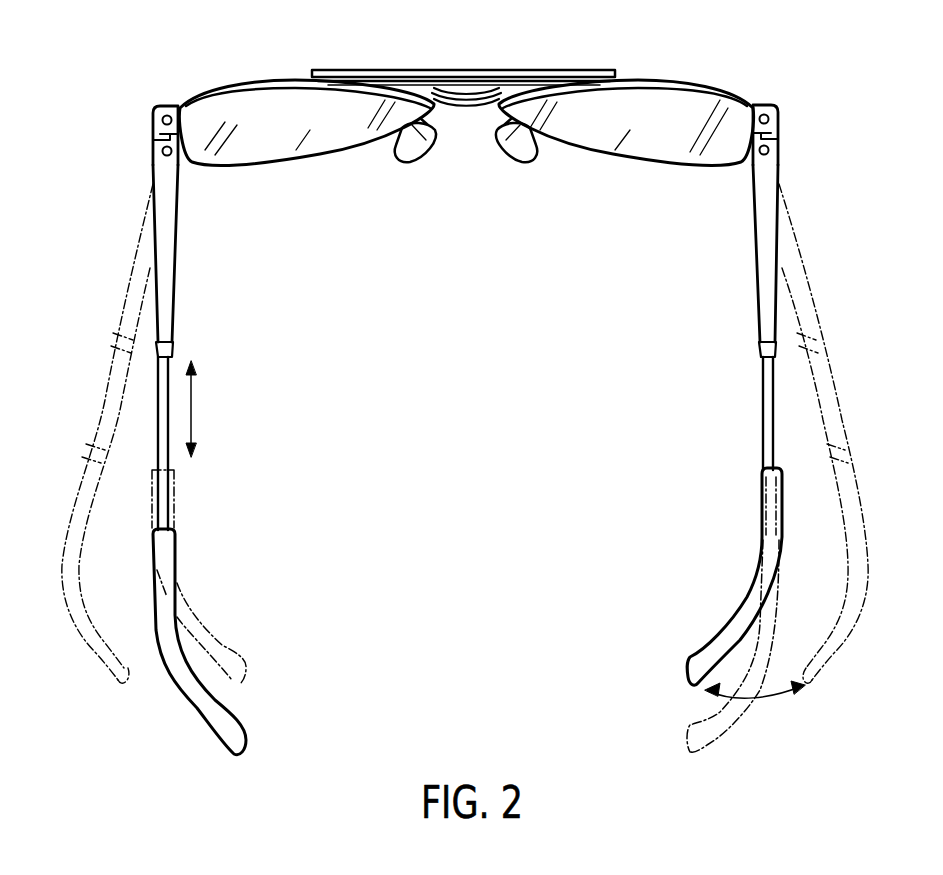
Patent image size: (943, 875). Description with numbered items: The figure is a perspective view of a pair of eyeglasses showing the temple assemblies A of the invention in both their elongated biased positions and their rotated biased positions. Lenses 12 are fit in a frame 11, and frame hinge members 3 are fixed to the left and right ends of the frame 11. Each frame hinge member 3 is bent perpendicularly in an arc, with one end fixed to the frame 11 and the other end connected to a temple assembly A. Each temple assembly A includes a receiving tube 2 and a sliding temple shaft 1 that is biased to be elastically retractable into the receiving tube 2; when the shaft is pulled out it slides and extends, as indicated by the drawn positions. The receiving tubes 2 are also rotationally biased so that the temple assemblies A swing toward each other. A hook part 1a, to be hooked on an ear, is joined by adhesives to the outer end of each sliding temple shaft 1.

The sliding temple shaft 1 is at (157, 409).
The hook part 1a is at (202, 710).
The receiving tube 2 is at (178, 263).
The frame hinge member 3 is at (158, 107).
The frame 11 is at (655, 80).
The lens 12 is at (276, 135).
The temple assembly A is at (193, 345).